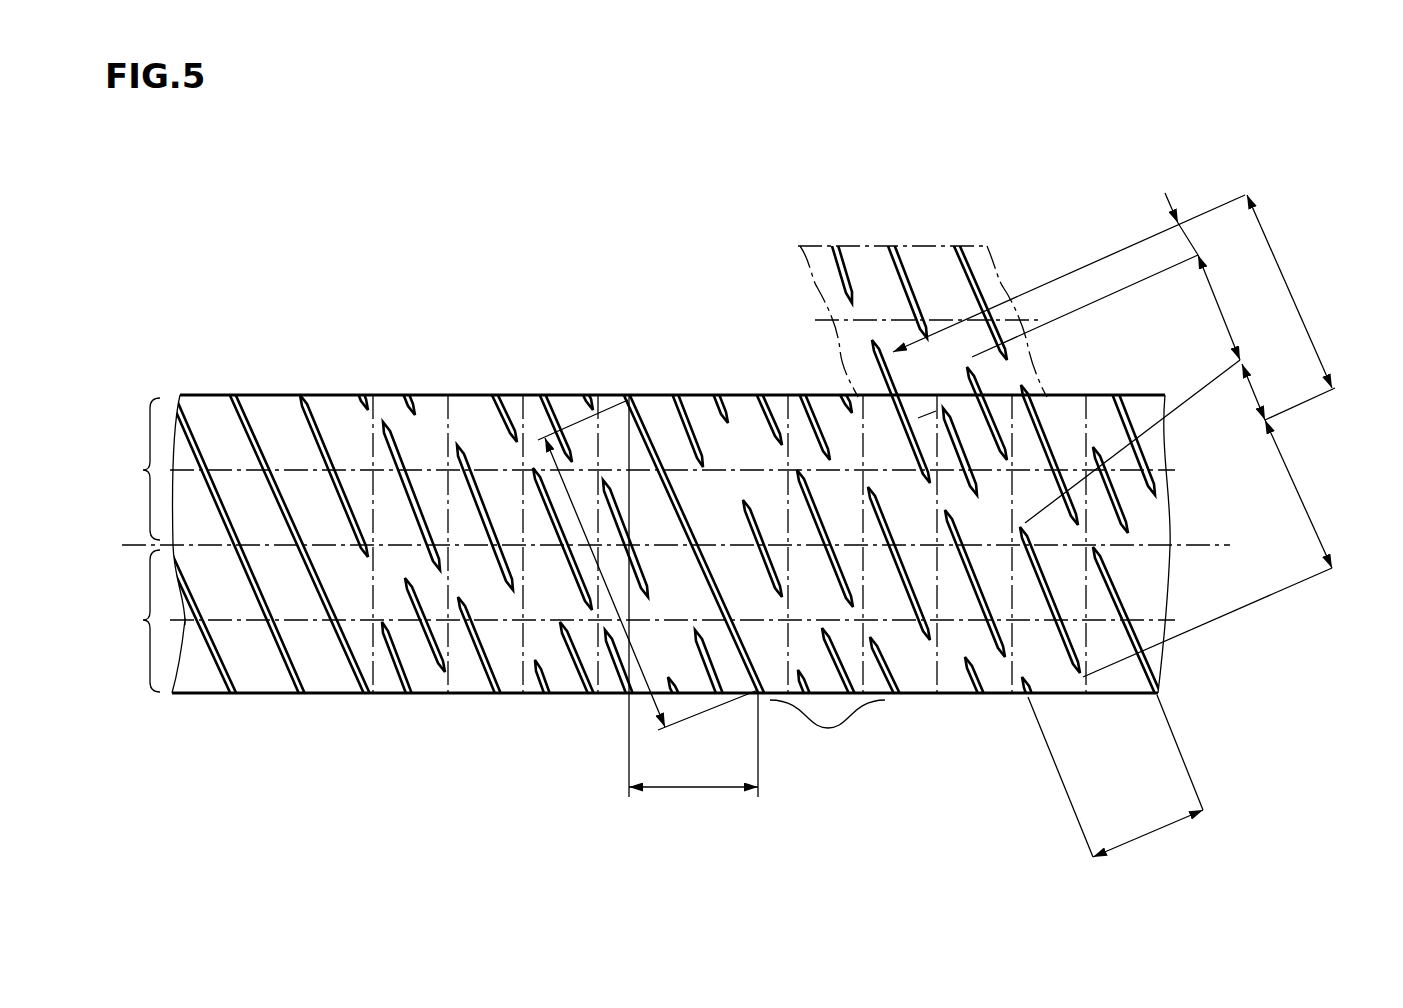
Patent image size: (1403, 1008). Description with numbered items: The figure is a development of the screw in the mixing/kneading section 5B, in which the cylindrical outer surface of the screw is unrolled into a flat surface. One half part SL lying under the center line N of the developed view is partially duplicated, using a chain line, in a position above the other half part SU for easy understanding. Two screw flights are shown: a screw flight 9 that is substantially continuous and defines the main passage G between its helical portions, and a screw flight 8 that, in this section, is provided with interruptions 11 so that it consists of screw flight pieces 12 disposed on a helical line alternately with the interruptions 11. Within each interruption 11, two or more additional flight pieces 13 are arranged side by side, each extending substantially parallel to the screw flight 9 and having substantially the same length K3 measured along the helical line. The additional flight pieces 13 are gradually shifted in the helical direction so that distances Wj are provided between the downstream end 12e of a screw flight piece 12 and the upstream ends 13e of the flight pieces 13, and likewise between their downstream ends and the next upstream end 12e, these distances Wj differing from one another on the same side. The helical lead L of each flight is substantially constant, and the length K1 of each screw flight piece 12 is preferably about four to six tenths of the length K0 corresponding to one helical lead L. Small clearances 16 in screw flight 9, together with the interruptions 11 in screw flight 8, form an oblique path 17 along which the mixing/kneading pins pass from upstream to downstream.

The mixing/kneading section 5B is at (553, 305).
The screw flight 8 is at (1063, 660).
The screw flight 9 is at (977, 678).
The interruption 11 is at (1312, 291).
The screw flight piece 12 is at (742, 527).
The end of screw flight piece 12e is at (941, 306).
The additional flight piece 13 is at (688, 393).
The end of additional flight piece 13e is at (967, 340).
The clearance 16 is at (923, 490).
The path 17 is at (932, 688).
The center line N is at (664, 547).
The half part SU is at (128, 469).
The half part SL is at (129, 621).
The main passage G is at (986, 778).
The helical lead L is at (693, 596).
The length corresponding to one helical lead K0 is at (616, 604).
The length of screw flight piece K1 is at (1212, 548).
The length of additional flight piece K3 is at (1229, 307).
The distance Wj is at (921, 407).